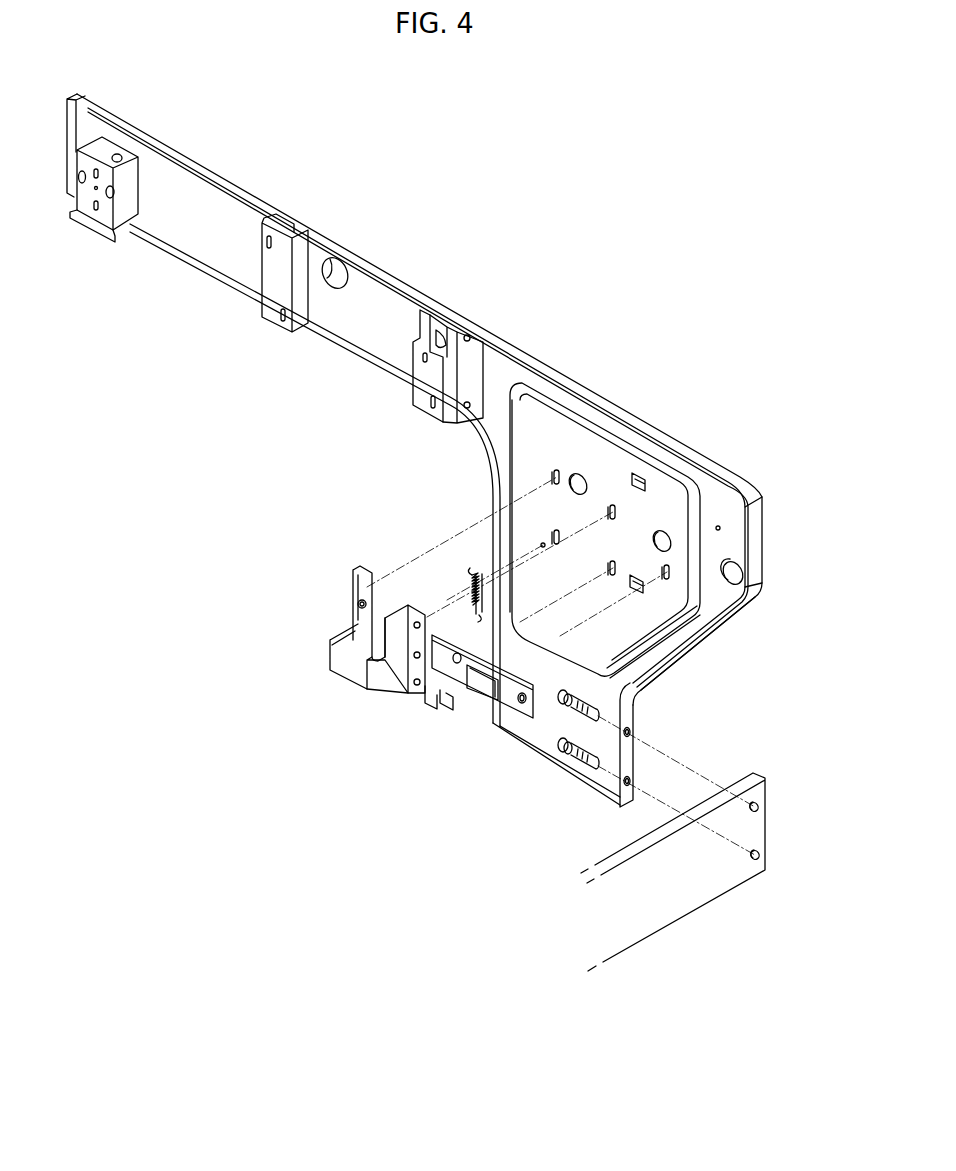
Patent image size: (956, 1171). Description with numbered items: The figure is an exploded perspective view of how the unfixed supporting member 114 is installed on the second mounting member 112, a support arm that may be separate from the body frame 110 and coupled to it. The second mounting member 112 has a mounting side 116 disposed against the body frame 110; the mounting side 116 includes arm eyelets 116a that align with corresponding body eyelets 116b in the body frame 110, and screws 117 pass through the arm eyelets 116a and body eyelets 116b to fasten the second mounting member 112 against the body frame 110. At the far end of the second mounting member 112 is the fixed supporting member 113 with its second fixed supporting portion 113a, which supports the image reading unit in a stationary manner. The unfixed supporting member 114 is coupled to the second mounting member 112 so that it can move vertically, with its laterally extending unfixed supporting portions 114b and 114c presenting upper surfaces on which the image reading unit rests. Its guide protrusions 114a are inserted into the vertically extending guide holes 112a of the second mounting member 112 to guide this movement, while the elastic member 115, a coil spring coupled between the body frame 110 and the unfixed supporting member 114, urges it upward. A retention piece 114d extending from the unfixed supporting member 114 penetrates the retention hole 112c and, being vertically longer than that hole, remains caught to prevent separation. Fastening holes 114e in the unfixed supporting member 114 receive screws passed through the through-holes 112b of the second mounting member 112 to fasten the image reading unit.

The body frame 110 is at (687, 906).
The second mounting member 112 is at (385, 256).
The guide holes 112a is at (551, 537).
The through-holes 112b is at (663, 532).
The retention hole 112c is at (709, 621).
The fixed supporting member 113 is at (137, 182).
The second fixed supporting portion 113a is at (93, 226).
The unfixed supporting member 114 is at (324, 680).
The guide protrusions 114a is at (422, 692).
The unfixed supporting portion 114b is at (337, 642).
The unfixed supporting portion 114c is at (480, 691).
The retention piece 114d is at (440, 704).
The fastening holes 114e is at (358, 605).
The elastic member 115 is at (470, 578).
The mounting side 116 is at (639, 758).
The arm eyelets 116a is at (626, 741).
The body eyelets 116b is at (767, 853).
The screws 117 is at (557, 748).